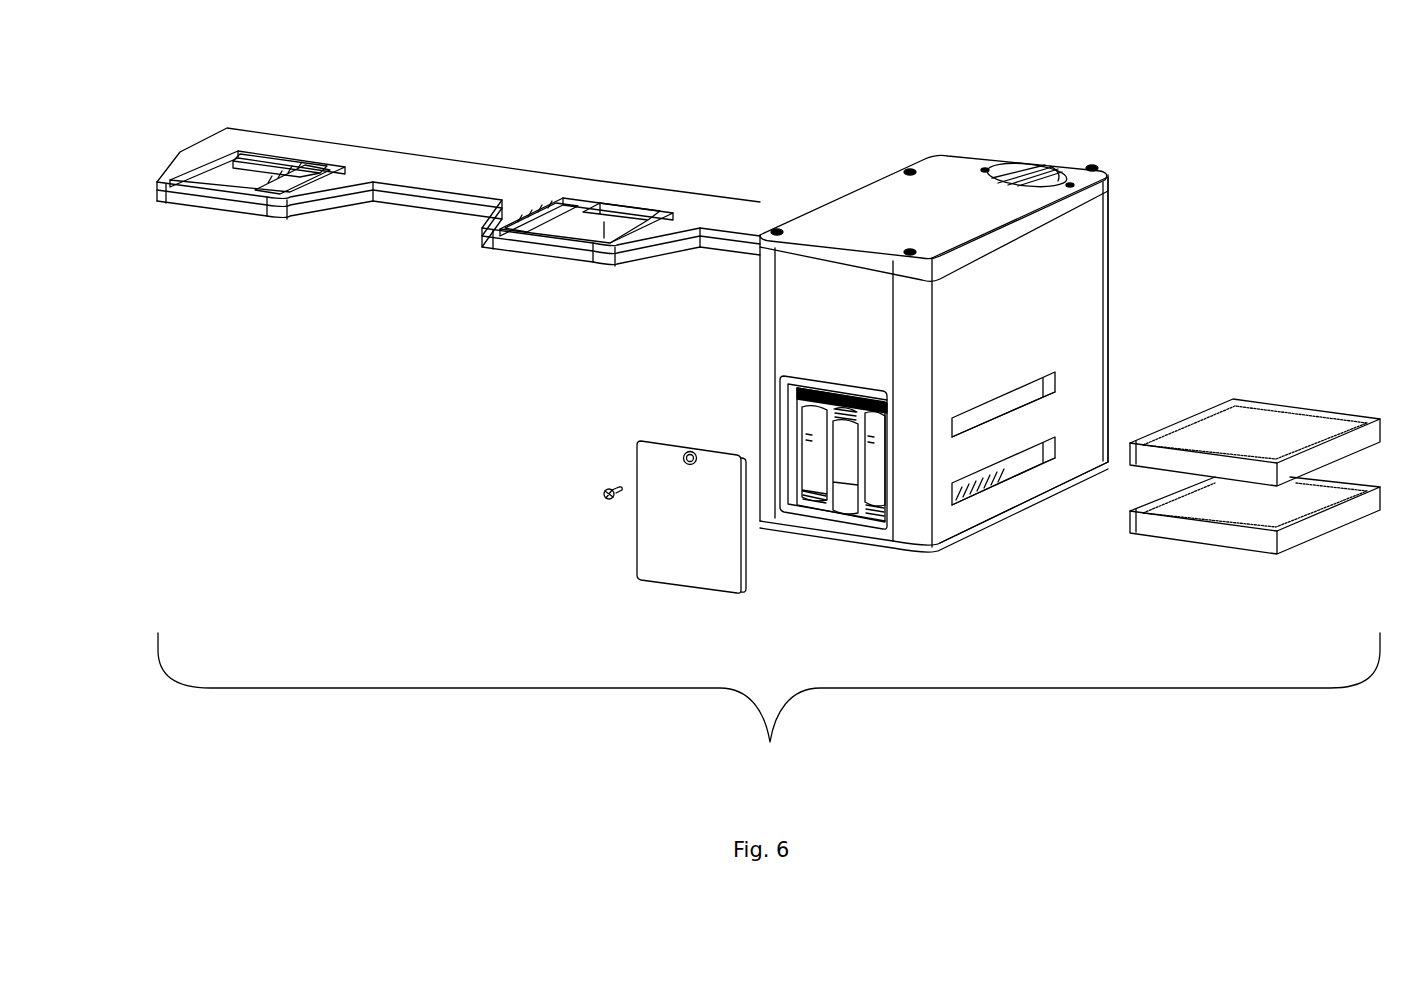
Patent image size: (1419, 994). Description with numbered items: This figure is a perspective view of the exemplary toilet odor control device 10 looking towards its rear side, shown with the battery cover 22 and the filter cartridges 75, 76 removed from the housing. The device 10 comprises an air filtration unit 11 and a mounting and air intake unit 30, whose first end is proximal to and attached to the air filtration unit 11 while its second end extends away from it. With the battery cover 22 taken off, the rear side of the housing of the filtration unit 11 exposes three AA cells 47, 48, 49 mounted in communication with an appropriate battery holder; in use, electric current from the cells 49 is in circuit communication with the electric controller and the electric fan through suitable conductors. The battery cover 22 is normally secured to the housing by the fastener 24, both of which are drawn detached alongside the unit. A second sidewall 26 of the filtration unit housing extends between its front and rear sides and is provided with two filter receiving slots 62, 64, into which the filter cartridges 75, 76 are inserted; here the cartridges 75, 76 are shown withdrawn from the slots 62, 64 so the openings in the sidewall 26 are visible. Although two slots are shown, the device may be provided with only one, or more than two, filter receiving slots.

The toilet odor control device 10 is at (769, 705).
The air filtration unit 11 is at (992, 371).
The battery cover 22 is at (648, 567).
The fastener 24 is at (603, 496).
The second sidewall 26 is at (1055, 290).
The mounting and air intake unit 30 is at (417, 172).
The first battery 47 is at (813, 462).
The second battery 48 is at (843, 462).
The cells 49 is at (877, 467).
The filter receiving slot 62 is at (1052, 380).
The filter receiving slot 64 is at (1058, 448).
The filter cartridge 75 is at (1255, 442).
The filter cartridge 76 is at (1233, 537).